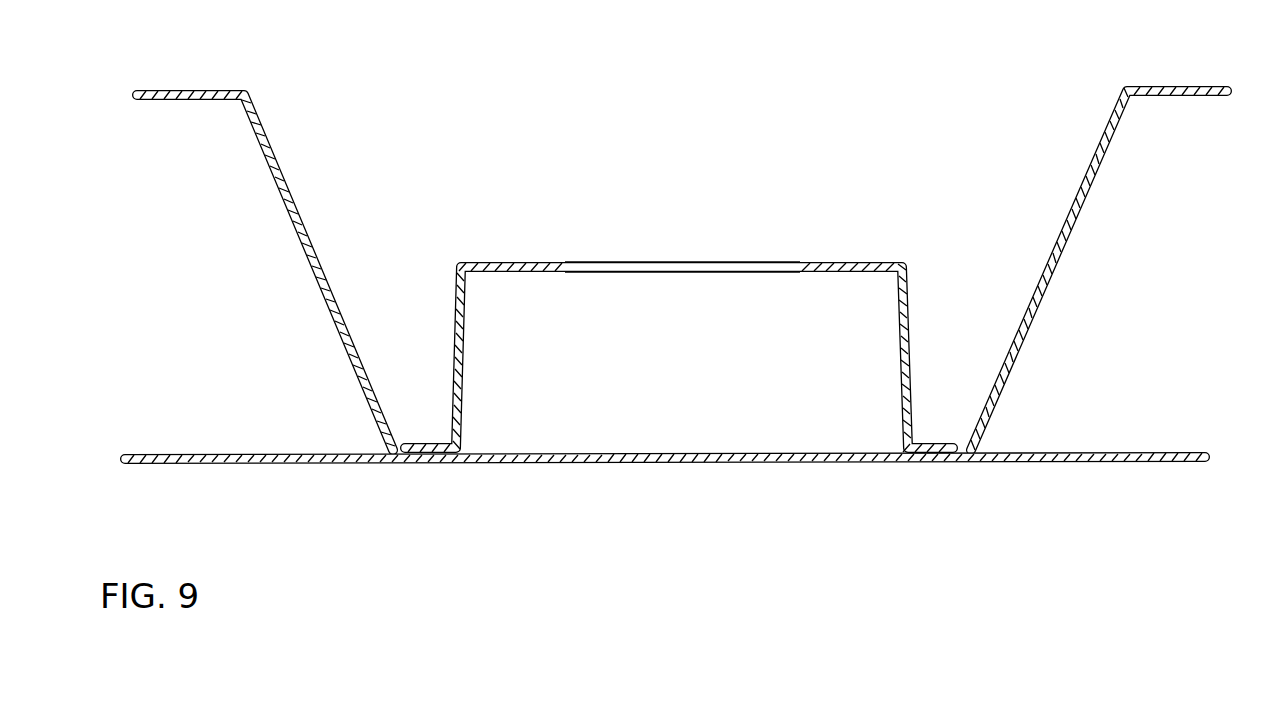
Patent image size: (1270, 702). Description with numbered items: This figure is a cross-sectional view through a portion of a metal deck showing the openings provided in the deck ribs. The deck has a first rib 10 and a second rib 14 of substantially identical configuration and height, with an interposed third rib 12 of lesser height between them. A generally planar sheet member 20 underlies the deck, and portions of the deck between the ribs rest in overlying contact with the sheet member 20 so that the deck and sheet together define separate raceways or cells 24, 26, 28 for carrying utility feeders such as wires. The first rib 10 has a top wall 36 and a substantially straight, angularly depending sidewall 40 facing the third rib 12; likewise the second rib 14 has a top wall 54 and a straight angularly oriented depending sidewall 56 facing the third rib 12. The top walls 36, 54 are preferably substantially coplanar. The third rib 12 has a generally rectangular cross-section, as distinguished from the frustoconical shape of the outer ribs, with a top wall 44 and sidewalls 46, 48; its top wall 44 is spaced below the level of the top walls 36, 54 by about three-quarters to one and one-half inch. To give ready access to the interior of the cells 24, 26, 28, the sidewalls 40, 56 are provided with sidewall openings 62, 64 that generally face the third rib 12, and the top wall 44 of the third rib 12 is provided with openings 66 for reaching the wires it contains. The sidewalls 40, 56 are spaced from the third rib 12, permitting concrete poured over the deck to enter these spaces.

The first rib 10 is at (264, 239).
The third rib 12 is at (683, 323).
The second rib 14 is at (1116, 242).
The sheet member 20 is at (249, 464).
The cell 24 is at (243, 345).
The cell 26 is at (690, 362).
The cell 28 is at (1121, 370).
The top wall 36 is at (183, 90).
The sidewall 40 is at (352, 354).
The top wall 44 is at (548, 262).
The sidewall 46 is at (464, 357).
The sidewall 48 is at (906, 350).
The top wall 54 is at (1205, 86).
The sidewall 56 is at (995, 396).
The sidewall opening 62 is at (293, 210).
The sidewall opening 64 is at (1064, 213).
The opening 66 is at (696, 262).